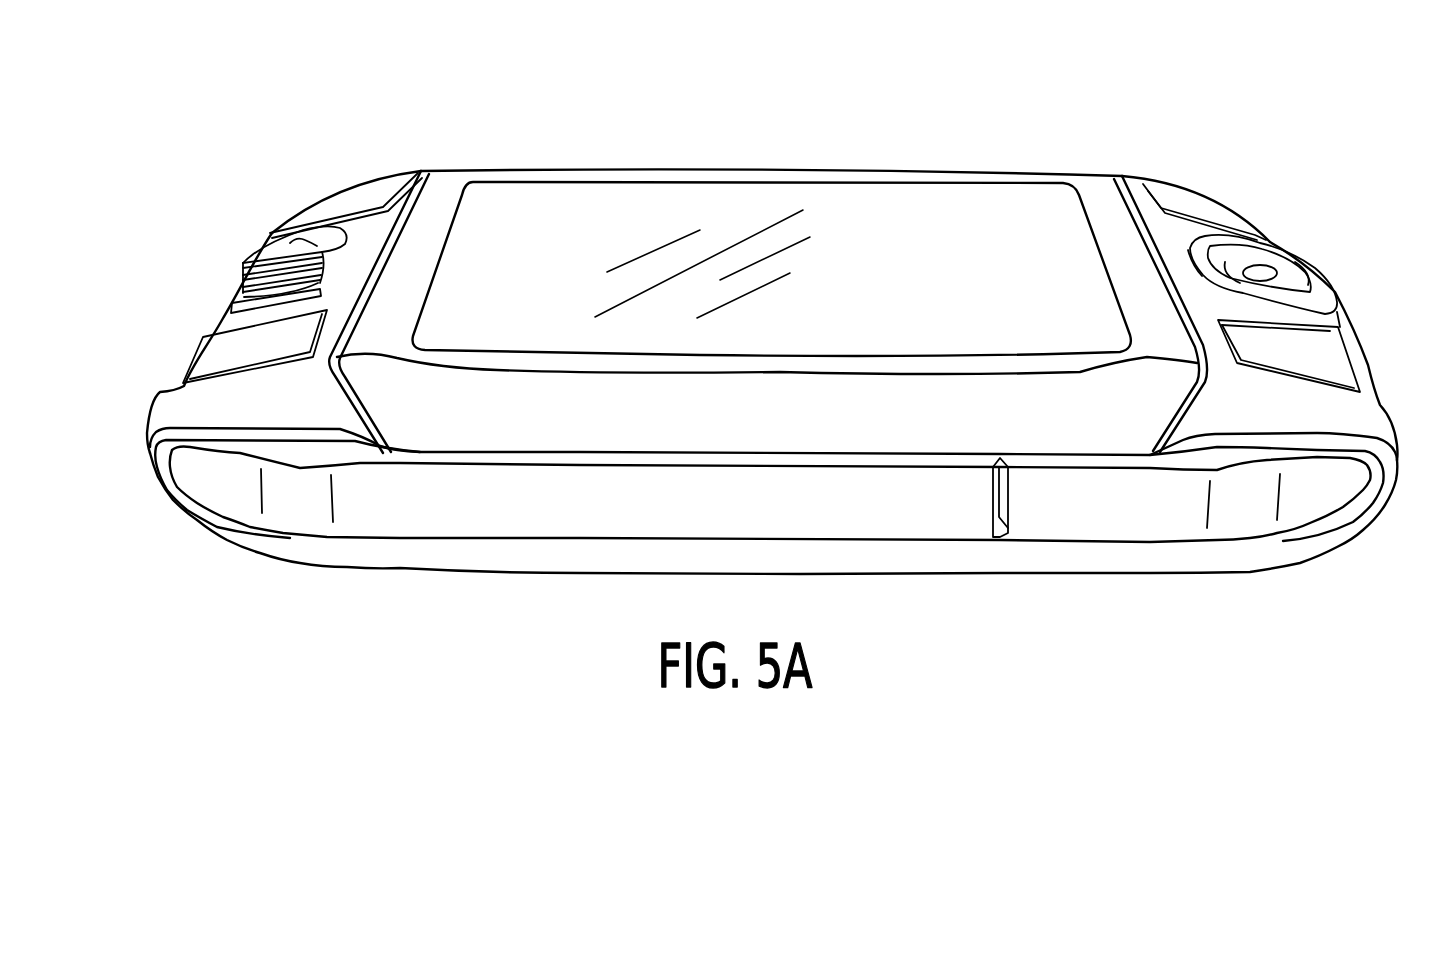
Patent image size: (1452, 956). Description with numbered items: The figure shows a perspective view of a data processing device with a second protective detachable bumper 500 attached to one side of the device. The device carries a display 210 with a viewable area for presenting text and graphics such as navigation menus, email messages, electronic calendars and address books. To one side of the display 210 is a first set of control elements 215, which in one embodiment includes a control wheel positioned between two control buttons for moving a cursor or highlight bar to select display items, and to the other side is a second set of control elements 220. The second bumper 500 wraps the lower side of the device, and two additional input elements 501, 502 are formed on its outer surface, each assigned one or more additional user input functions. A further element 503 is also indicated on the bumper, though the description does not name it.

The display 210 is at (832, 170).
The first set of control elements 215 is at (283, 194).
The second set of control elements 220 is at (1263, 199).
The second bumper 500 is at (880, 513).
The additional input element 501 is at (1259, 515).
The additional input element 502 is at (307, 505).
The latch 503 is at (1003, 517).